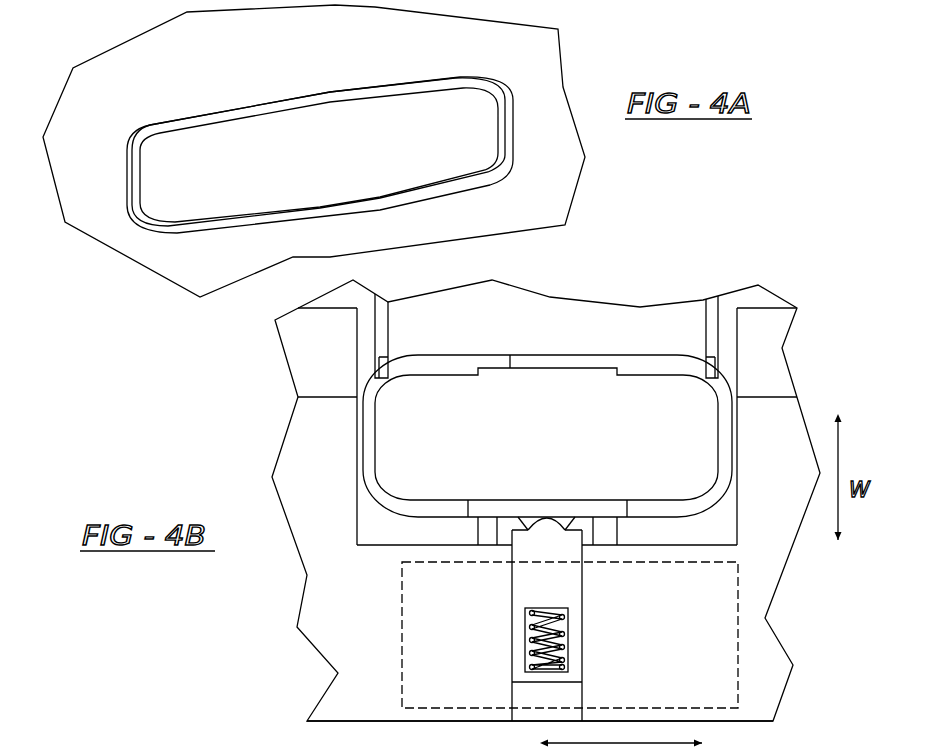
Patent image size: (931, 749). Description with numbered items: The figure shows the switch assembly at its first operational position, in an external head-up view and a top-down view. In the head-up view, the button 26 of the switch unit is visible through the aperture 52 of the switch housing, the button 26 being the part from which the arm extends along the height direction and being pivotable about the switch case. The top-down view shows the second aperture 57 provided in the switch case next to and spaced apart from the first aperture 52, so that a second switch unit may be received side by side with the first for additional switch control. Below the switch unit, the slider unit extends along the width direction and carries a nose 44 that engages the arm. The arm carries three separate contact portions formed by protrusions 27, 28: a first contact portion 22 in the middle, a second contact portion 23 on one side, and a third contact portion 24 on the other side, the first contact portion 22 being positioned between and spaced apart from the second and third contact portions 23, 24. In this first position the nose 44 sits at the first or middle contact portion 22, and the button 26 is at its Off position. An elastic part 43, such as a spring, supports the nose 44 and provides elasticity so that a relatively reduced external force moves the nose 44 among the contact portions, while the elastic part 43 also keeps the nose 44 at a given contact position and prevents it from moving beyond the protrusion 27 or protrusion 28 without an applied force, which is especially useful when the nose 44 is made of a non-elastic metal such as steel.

In FIG. 4A, the button 26 is at (345, 164).
In FIG. 4B, the second aperture 57 is at (658, 371).
In FIG. 4B, the first contact portion 22 is at (545, 519).
In FIG. 4B, the protrusion 27 is at (527, 515).
In FIG. 4B, the protrusion 28 is at (568, 516).
In FIG. 4B, the second contact portion 23 is at (510, 522).
In FIG. 4B, the third contact portion 24 is at (583, 524).
In FIG. 4B, the nose 44 is at (545, 532).
In FIG. 4B, the elastic part 43 is at (553, 652).
In FIG. 4B, the aperture 52 is at (740, 649).